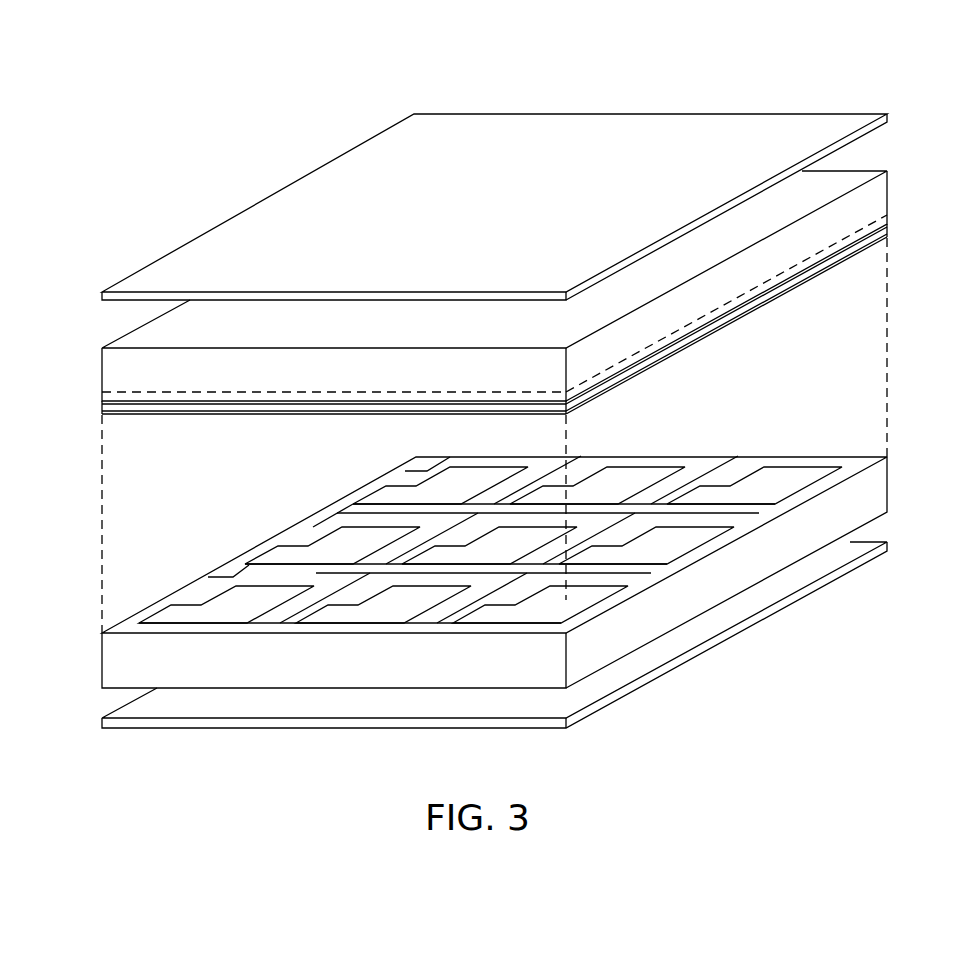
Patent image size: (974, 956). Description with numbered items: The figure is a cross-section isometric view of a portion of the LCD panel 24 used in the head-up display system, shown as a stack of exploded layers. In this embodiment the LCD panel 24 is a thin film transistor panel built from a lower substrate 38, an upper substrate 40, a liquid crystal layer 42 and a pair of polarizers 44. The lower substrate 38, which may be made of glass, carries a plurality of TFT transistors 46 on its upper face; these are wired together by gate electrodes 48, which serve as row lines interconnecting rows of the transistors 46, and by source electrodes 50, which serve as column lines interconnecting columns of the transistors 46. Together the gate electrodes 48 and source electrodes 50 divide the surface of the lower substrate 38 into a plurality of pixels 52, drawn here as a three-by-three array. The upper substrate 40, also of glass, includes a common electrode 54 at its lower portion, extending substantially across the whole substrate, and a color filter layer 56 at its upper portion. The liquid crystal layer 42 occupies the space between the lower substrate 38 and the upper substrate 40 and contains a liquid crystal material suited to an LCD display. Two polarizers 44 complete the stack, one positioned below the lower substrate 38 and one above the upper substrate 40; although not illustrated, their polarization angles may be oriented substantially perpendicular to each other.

The LCD panel 24 is at (193, 67).
The lower substrate 38 is at (101, 665).
The upper substrate 40 is at (888, 204).
The liquid crystal layer 42 is at (888, 327).
The polarizers 44 is at (373, 138).
The TFT transistors 46 is at (203, 577).
The gate electrodes 48 is at (853, 456).
The source electrodes 50 is at (262, 623).
The pixels 52 is at (247, 596).
The common electrode 54 is at (101, 408).
The color filter layer 56 is at (101, 396).